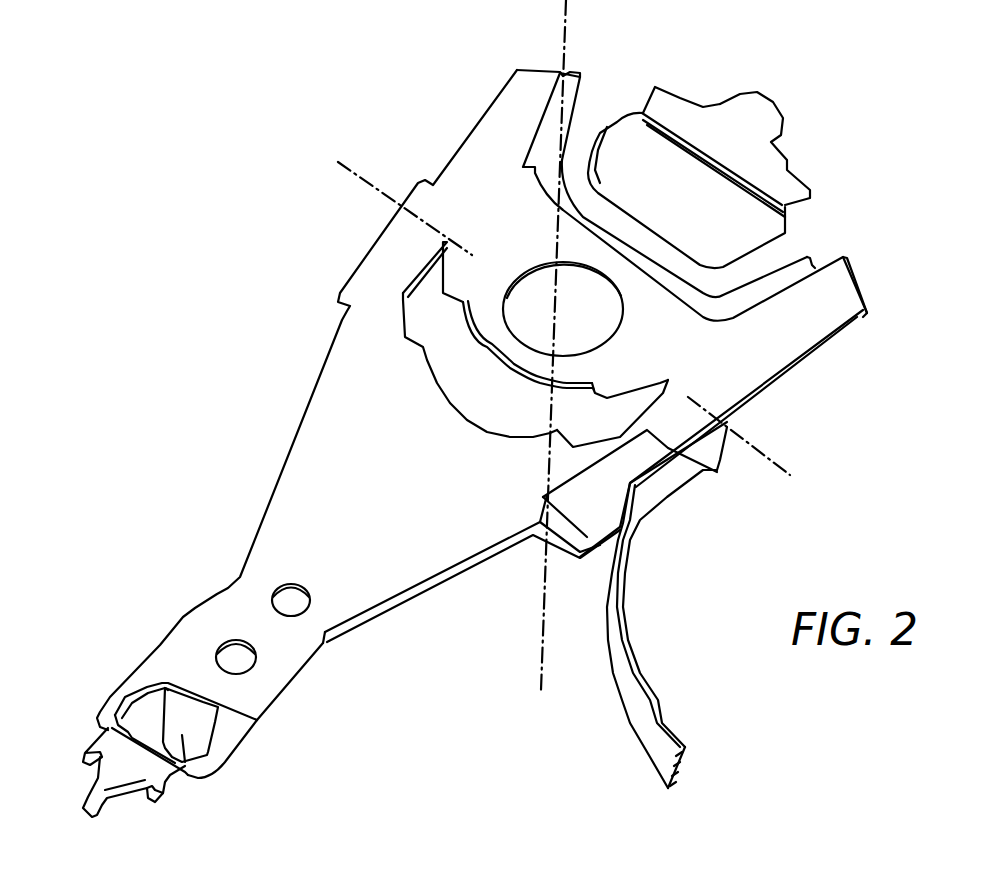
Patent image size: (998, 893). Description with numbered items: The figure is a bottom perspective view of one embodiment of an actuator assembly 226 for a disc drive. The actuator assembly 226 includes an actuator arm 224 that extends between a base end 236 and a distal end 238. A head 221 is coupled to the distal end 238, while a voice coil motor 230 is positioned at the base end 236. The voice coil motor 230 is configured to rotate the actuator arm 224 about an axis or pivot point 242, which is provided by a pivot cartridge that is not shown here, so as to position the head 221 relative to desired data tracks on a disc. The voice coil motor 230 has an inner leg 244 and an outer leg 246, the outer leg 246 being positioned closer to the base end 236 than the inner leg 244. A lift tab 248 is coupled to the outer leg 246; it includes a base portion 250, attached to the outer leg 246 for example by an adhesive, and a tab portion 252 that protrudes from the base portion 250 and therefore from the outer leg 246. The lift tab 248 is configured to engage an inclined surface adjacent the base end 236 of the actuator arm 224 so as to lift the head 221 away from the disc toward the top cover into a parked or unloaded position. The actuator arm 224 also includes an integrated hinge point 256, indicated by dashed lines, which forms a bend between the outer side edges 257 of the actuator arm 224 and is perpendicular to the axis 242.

The actuator assembly 226 is at (268, 189).
The actuator arm 224 is at (322, 490).
The head 221 is at (175, 702).
The distal end 238 is at (185, 791).
The voice coil motor 230 is at (580, 105).
The axis or pivot point 242 is at (560, 236).
The inner leg 244 is at (652, 223).
The outer leg 246 is at (687, 143).
The lift tab 248 is at (790, 170).
The base portion 250 is at (680, 110).
The tab portion 252 is at (755, 102).
The base end 236 is at (814, 259).
The integrated hinge point 256 is at (753, 453).
The outer side edges 257 is at (340, 328).